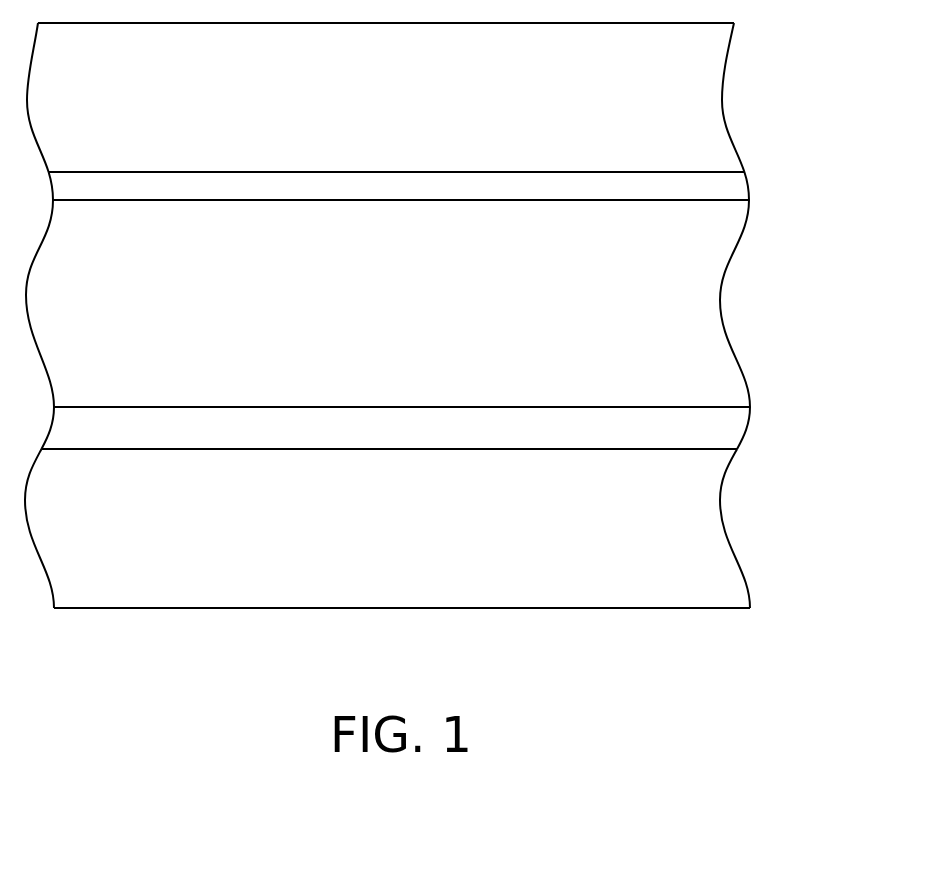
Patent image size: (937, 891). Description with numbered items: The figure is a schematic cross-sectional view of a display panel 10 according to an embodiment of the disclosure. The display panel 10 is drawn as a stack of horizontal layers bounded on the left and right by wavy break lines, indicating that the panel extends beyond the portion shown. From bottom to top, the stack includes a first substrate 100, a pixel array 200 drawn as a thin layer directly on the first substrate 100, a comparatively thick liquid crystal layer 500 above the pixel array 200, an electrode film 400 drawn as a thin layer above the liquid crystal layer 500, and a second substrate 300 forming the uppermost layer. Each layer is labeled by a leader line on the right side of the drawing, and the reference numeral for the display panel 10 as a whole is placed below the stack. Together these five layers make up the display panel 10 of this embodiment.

The display panel 10 is at (430, 352).
The first substrate 100 is at (712, 533).
The pixel array 200 is at (722, 430).
The second substrate 300 is at (709, 98).
The electrode film 400 is at (735, 185).
The liquid crystal layer 500 is at (708, 303).